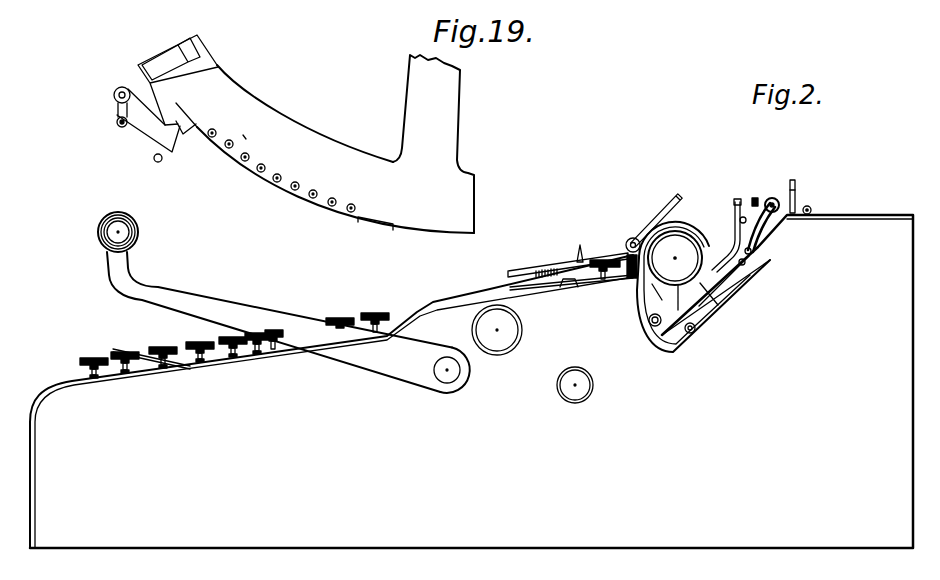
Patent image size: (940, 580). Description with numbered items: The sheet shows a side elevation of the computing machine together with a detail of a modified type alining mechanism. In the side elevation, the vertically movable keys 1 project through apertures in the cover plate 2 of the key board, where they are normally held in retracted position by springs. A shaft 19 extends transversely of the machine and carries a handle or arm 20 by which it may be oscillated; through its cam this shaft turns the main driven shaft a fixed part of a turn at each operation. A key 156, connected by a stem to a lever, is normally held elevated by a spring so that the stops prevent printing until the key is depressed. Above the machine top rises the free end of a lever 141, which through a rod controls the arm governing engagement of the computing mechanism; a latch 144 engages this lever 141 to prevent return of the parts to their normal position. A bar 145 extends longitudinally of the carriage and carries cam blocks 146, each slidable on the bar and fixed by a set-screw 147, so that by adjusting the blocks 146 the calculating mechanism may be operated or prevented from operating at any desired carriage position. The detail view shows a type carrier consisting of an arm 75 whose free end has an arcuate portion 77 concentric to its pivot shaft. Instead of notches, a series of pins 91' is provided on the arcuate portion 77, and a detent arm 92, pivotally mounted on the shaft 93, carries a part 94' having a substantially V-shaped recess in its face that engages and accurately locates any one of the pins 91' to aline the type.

In FIG. 19, the arm 75 is at (433, 144).
In FIG. 19, the arcuate portion 77 is at (335, 149).
In FIG. 19, the pins 91' is at (281, 170).
In FIG. 19, the arm 92 is at (145, 120).
In FIG. 19, the shaft 93 is at (114, 94).
In FIG. 19, the part 94' is at (198, 151).
In FIG. 2, the cover plate 2 is at (83, 380).
In FIG. 2, the keys 1 is at (193, 340).
In FIG. 2, the handle or arm 20 is at (163, 288).
In FIG. 2, the shaft 19 is at (440, 378).
In FIG. 2, the key 156 is at (602, 258).
In FIG. 2, the set-screw 147 is at (754, 200).
In FIG. 2, the bar 145 is at (762, 198).
In FIG. 2, the cam blocks 146 is at (776, 197).
In FIG. 2, the lever 141 is at (796, 186).
In FIG. 2, the latch 144 is at (820, 205).